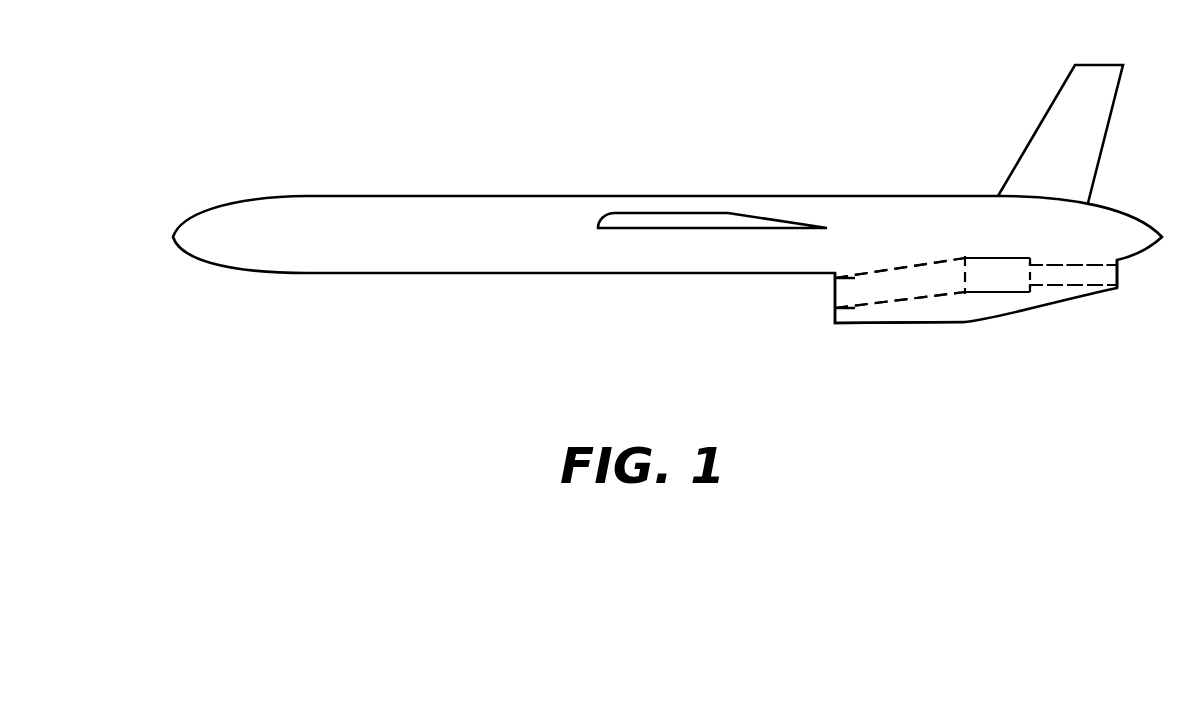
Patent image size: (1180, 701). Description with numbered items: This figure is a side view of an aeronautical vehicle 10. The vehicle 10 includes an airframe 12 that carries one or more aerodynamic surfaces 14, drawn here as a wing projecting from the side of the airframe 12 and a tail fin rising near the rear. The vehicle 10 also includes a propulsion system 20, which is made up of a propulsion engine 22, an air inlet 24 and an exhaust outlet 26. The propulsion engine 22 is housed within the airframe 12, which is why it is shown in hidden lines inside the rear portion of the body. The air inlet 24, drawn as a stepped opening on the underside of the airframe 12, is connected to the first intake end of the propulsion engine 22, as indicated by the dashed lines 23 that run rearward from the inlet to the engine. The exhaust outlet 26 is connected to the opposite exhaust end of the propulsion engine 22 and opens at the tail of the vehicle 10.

The aeronautical vehicle 10 is at (772, 160).
The airframe 12 is at (363, 196).
The aerodynamic surfaces 14 is at (650, 228).
The propulsion system 20 is at (970, 310).
The propulsion engine 22 is at (1000, 272).
The dashed lines 23 is at (873, 280).
The air inlet 24 is at (835, 295).
The exhaust outlet 26 is at (1120, 277).